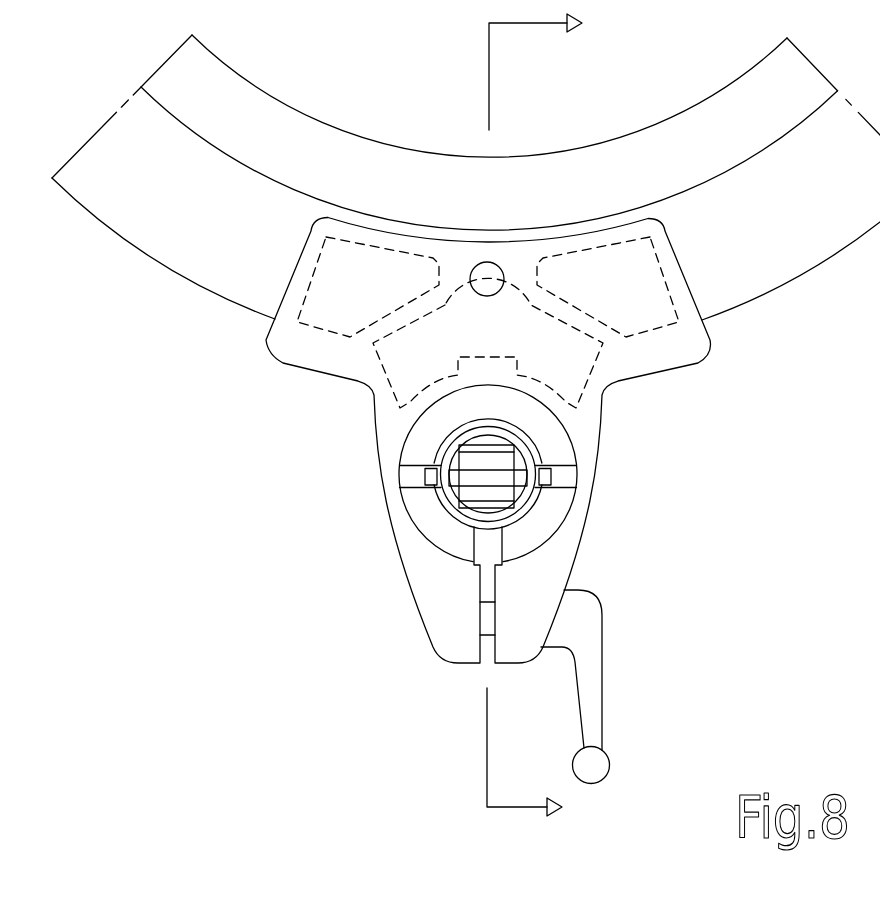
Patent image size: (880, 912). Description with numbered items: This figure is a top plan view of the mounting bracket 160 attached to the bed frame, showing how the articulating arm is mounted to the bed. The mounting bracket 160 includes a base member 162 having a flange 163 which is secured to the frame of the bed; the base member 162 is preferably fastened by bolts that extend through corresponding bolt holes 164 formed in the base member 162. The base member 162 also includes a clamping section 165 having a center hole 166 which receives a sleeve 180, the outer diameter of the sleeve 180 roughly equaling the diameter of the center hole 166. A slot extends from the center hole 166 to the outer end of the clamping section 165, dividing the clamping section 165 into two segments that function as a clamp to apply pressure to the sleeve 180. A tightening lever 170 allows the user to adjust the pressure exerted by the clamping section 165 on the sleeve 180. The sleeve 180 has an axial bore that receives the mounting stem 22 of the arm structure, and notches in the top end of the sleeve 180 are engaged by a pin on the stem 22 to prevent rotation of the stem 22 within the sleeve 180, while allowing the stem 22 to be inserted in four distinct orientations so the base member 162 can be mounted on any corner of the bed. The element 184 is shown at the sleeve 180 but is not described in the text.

The mounting stem 22 is at (533, 449).
The mounting bracket 160 is at (727, 485).
The base member 162 is at (312, 372).
The flange 163 is at (554, 242).
The bolt holes 164 is at (478, 264).
The clamping section 165 is at (372, 653).
The center hole 166 is at (425, 542).
The tightening lever 170 is at (603, 703).
The sleeve 180 is at (565, 534).
The key 184 is at (403, 490).